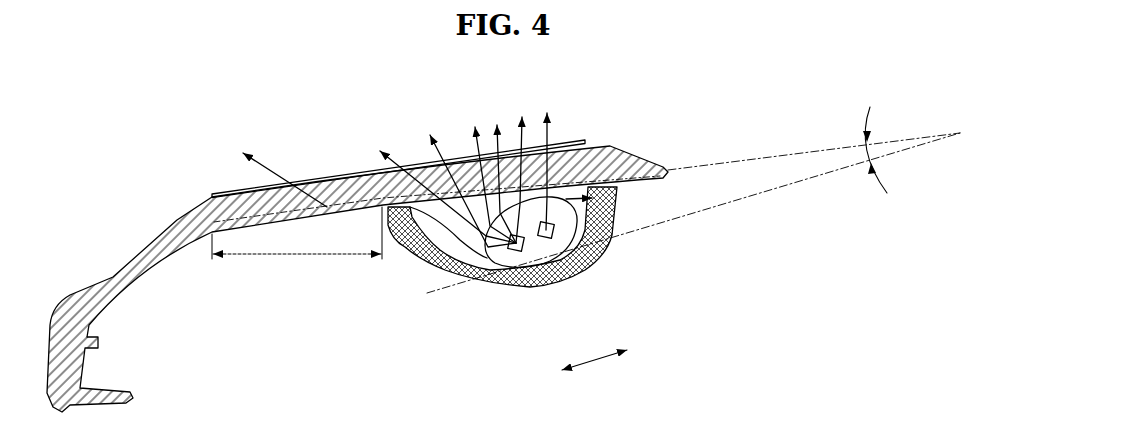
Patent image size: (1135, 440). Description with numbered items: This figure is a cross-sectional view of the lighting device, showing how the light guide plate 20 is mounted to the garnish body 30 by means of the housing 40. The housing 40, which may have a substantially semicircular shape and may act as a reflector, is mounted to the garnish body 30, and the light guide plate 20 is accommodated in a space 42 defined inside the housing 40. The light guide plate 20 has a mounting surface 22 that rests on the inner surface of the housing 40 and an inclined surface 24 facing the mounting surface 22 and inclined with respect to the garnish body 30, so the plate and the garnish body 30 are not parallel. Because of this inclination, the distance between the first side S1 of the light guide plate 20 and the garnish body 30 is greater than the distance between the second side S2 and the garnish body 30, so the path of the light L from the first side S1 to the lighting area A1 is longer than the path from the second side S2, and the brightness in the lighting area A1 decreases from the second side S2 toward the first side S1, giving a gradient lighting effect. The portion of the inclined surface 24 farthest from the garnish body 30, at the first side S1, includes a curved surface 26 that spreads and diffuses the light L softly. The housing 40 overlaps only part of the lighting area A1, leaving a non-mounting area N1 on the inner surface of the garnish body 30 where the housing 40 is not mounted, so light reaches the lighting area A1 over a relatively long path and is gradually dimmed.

The garnish body 30 is at (132, 258).
The lighting area A1 is at (240, 190).
The non-mounting area N1 is at (297, 244).
The light guide plate 20 is at (615, 200).
The mounting surface 22 is at (585, 270).
The housing 40 is at (420, 255).
The space 42 is at (457, 240).
The inclined surface 24 is at (515, 206).
The curved surface 26 is at (480, 252).
The light L is at (385, 157).
The first side S1 is at (576, 367).
The second side S2 is at (628, 348).